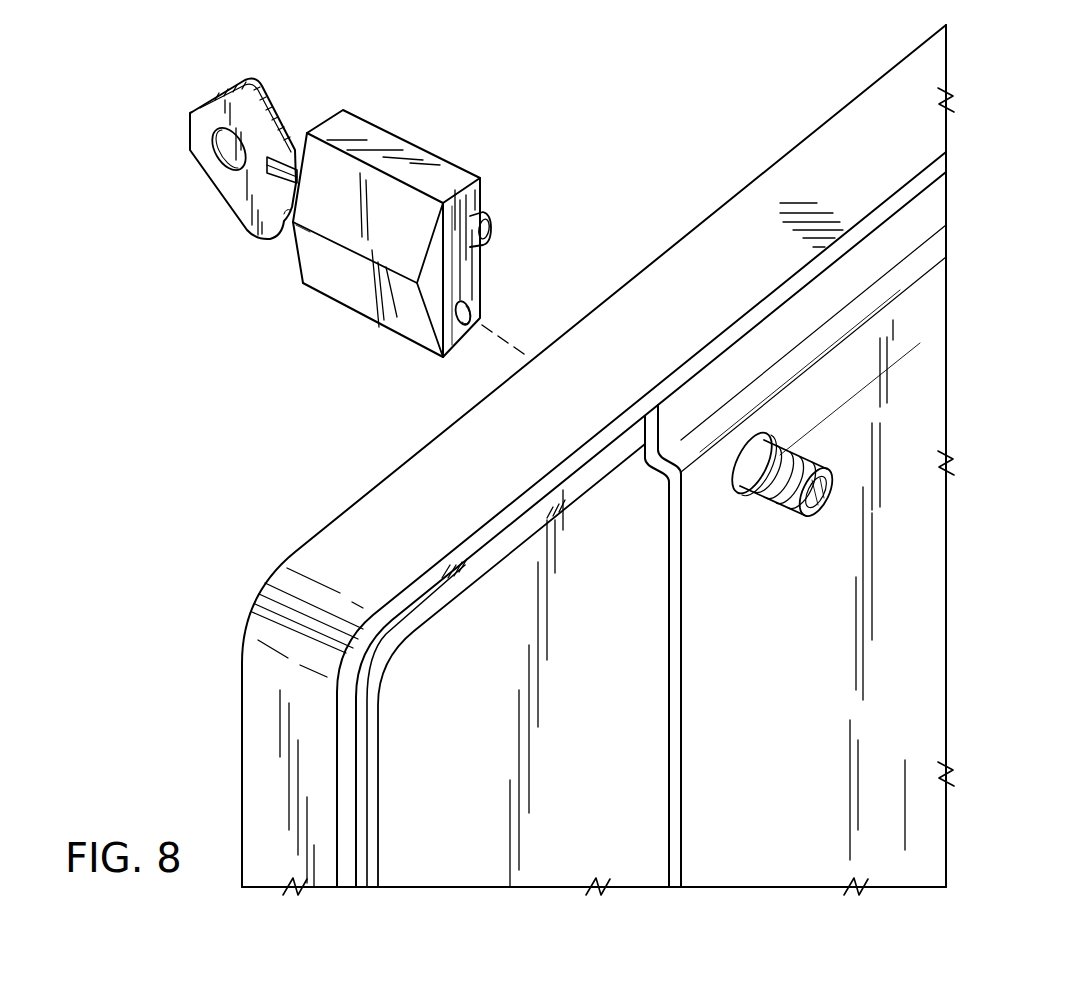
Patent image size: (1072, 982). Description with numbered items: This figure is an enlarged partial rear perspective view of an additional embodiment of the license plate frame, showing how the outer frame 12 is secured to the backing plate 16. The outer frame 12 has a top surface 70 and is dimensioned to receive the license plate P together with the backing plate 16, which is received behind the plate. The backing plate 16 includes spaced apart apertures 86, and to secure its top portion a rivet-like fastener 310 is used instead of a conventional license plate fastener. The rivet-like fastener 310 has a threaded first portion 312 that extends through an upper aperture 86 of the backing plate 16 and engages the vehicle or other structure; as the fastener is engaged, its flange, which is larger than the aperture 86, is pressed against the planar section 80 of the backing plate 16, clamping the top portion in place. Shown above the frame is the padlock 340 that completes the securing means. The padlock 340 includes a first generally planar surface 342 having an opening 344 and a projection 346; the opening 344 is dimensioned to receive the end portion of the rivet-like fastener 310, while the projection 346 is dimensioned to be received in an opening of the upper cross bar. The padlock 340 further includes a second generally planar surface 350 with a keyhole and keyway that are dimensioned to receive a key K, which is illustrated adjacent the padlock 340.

The outer frame 12 is at (378, 490).
The top surface 70 is at (461, 446).
The backing plate 16 is at (687, 720).
The license plate P is at (633, 645).
The planar section 80 is at (915, 647).
The rivet-like fastener 310 is at (772, 483).
The aperture 86 is at (743, 494).
The threaded first portion 312 is at (790, 497).
The padlock 340 is at (392, 233).
The first generally planar surface 342 is at (470, 267).
The opening 344 is at (470, 310).
The projection 346 is at (488, 215).
The second generally planar surface 350 is at (297, 258).
The key K is at (225, 190).